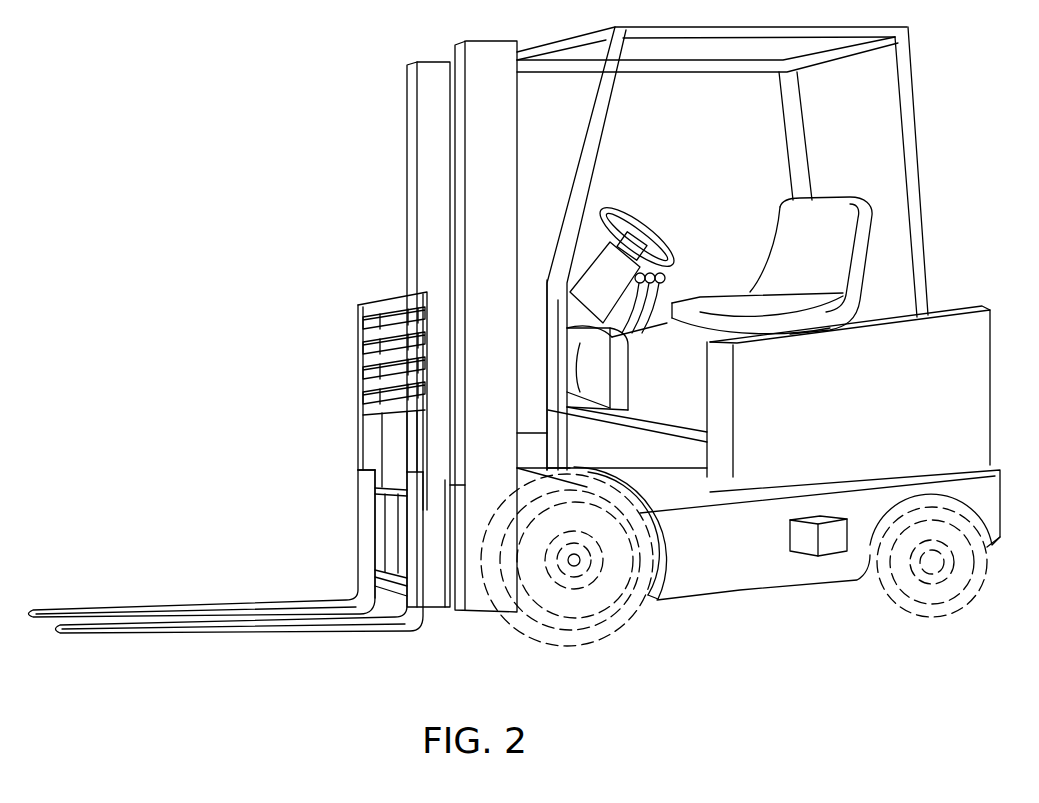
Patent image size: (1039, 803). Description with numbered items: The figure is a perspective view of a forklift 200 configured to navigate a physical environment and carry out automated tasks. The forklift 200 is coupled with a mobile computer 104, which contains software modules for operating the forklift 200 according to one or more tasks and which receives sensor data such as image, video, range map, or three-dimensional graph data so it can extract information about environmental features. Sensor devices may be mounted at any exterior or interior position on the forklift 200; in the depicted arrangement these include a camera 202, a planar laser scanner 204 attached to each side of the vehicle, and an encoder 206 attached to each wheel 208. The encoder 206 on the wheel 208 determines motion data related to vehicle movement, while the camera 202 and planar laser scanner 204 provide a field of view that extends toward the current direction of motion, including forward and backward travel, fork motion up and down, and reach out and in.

The forklift 200 is at (233, 110).
The mobile computer 104 is at (390, 438).
The camera 202 is at (382, 484).
The planar laser scanner 204 is at (830, 545).
The encoder 206 is at (575, 563).
The wheel 208 is at (497, 583).